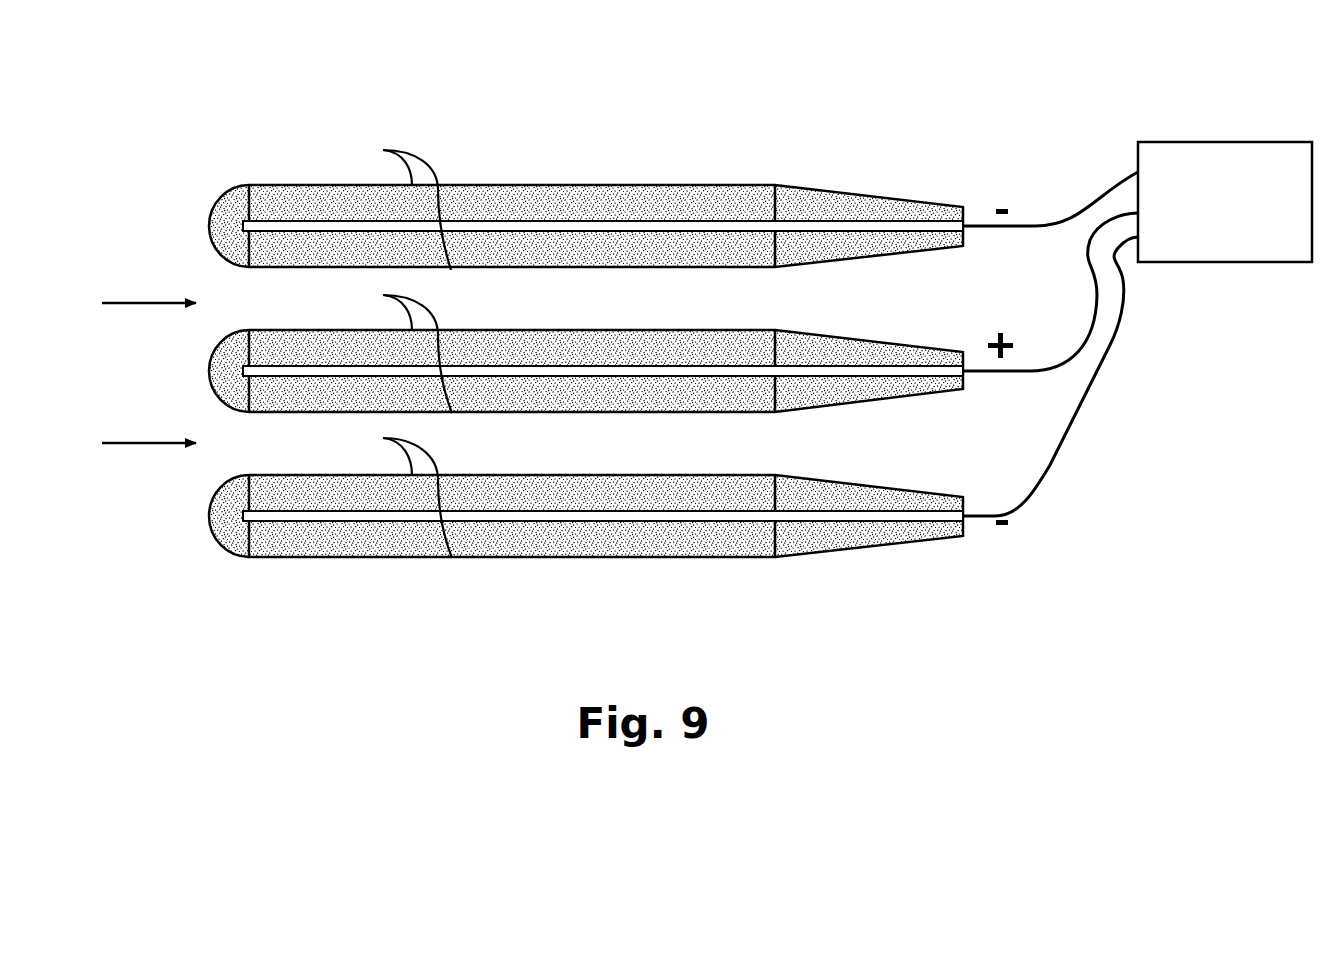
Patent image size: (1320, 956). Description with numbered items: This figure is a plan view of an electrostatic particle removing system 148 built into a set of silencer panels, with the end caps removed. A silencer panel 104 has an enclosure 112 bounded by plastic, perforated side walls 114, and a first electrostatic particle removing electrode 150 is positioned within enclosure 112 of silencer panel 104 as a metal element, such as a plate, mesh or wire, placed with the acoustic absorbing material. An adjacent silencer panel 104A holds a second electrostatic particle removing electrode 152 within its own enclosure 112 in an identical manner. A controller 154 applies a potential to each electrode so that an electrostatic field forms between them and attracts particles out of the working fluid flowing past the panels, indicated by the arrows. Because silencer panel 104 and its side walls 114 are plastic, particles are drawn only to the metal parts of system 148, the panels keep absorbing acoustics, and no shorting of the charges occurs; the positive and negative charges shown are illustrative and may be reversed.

The silencer panel 104 is at (262, 183).
The adjacent silencer panel 104A is at (207, 377).
The enclosure 112 is at (757, 268).
The side walls 114 is at (393, 349).
The electrostatic particle removing system 148 is at (1137, 158).
The first electrostatic particle removing electrode 150 is at (316, 220).
The second electrostatic particle removing electrode 152 is at (608, 364).
The controller 154 is at (1206, 233).